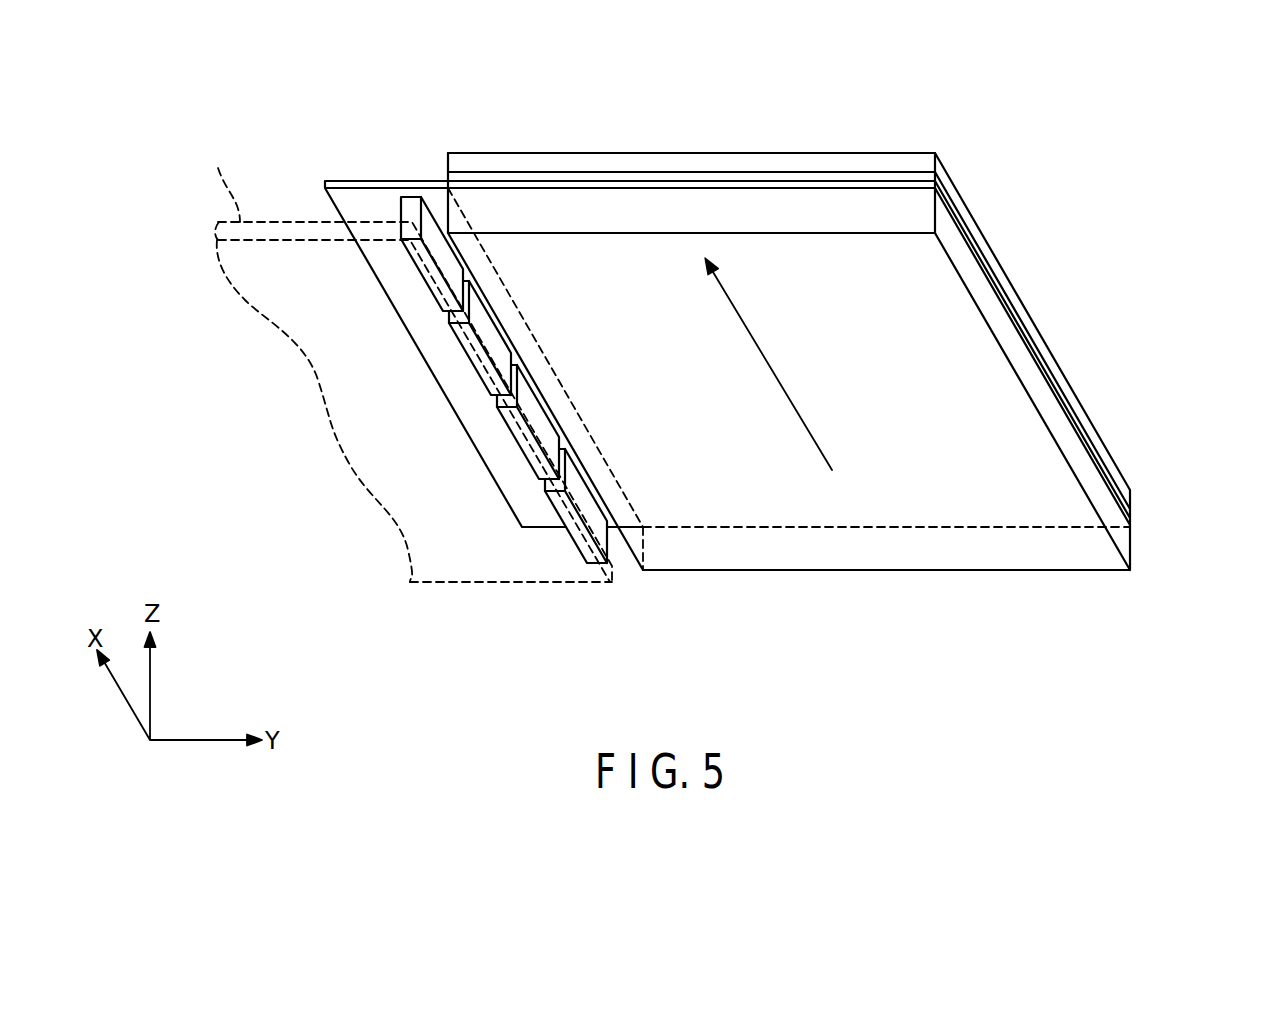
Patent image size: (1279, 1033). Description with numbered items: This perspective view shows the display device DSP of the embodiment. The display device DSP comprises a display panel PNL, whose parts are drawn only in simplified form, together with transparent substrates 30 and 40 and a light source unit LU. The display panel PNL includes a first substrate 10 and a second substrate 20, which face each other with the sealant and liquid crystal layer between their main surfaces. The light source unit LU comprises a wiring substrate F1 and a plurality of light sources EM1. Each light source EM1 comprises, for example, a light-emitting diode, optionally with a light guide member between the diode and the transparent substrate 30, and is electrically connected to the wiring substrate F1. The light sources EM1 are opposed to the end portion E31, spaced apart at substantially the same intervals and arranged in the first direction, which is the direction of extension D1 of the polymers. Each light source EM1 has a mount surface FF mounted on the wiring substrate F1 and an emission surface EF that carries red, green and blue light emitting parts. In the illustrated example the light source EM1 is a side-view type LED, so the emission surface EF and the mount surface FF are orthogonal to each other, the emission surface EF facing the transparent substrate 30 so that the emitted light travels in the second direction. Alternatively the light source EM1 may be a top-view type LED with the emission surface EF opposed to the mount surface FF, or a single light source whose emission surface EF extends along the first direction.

The display device DSP is at (1131, 146).
The display panel PNL is at (1134, 410).
The transparent substrate 40 is at (1043, 346).
The second substrate 20 is at (1060, 385).
The first substrate 10 is at (1082, 425).
The transparent substrate 30 is at (1083, 468).
The end portion E31 is at (446, 207).
The light source unit LU is at (410, 617).
The light source EM1 is at (413, 212).
The emission surface EF is at (443, 256).
The mount surface FF is at (413, 252).
The wiring substrate F1 is at (408, 361).
The direction of extension D1 is at (768, 364).